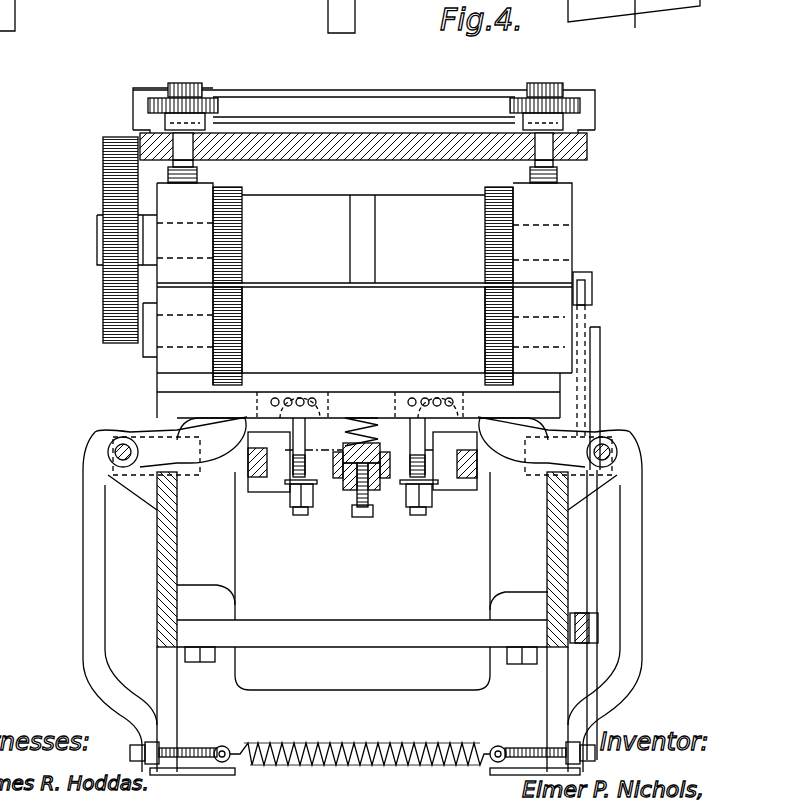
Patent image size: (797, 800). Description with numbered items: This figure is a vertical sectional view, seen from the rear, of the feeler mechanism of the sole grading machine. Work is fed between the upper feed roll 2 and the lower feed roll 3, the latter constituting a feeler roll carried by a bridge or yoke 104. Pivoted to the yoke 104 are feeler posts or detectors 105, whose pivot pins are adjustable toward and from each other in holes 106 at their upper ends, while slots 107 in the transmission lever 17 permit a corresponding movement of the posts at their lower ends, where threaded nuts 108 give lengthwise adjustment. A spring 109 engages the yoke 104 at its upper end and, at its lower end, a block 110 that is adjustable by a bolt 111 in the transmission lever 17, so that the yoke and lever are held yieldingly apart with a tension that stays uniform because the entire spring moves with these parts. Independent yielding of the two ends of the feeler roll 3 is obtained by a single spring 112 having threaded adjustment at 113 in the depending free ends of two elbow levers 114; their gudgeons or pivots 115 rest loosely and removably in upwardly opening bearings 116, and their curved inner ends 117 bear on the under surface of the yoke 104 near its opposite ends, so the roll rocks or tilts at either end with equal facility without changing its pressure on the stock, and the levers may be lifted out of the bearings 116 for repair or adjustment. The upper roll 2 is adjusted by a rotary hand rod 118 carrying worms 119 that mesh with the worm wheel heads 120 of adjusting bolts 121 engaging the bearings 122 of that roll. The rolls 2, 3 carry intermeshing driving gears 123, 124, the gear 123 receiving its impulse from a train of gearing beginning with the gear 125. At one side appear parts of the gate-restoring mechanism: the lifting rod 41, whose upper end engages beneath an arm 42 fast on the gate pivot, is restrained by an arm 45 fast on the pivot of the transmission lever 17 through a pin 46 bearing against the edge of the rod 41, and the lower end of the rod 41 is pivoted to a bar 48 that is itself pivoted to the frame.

The feed roll 2 is at (363, 239).
The feeler roll 3 is at (363, 330).
The transmission lever 17 is at (384, 480).
The lifting rod 41 is at (597, 545).
The arm 42 is at (590, 288).
The arm 45 is at (600, 360).
The pin 46 is at (585, 340).
The bar 48 is at (580, 645).
The bridge or yoke 104 is at (375, 392).
The feeler posts or detectors 105 is at (359, 447).
The holes 106 is at (312, 398).
The slots 107 is at (276, 474).
The threaded nuts 108 is at (303, 496).
The spring 109 is at (360, 415).
The block 110 is at (342, 478).
The bolt 111 is at (362, 518).
The spring 112 is at (372, 745).
The threaded adjustment 113 is at (145, 757).
The elbow levers 114 is at (90, 498).
The gudgeons or pivots 115 is at (121, 445).
The upwardly opening bearings 116 is at (108, 452).
The curved ends 117 is at (232, 430).
The rotary hand rod 118 is at (372, 100).
The worms 119 is at (185, 83).
The worm wheel heads 120 is at (208, 98).
The adjusting bolts 121 is at (200, 177).
The bearings 122 is at (595, 196).
The driving gear 123 is at (228, 237).
The driving gear 124 is at (230, 317).
The gear 125 is at (103, 301).